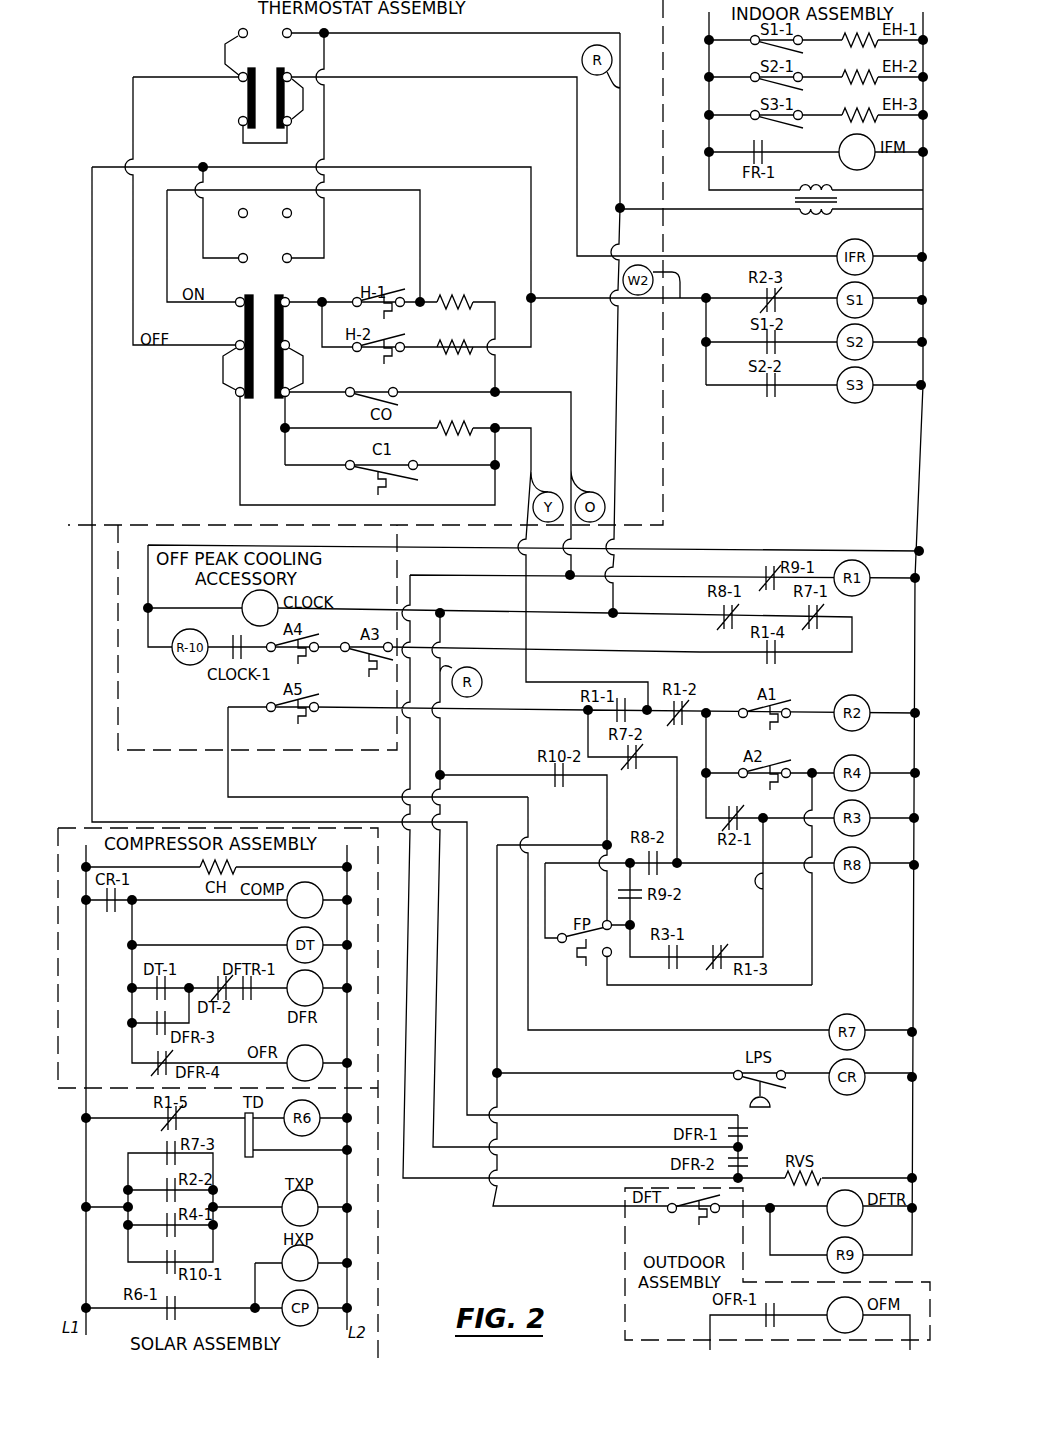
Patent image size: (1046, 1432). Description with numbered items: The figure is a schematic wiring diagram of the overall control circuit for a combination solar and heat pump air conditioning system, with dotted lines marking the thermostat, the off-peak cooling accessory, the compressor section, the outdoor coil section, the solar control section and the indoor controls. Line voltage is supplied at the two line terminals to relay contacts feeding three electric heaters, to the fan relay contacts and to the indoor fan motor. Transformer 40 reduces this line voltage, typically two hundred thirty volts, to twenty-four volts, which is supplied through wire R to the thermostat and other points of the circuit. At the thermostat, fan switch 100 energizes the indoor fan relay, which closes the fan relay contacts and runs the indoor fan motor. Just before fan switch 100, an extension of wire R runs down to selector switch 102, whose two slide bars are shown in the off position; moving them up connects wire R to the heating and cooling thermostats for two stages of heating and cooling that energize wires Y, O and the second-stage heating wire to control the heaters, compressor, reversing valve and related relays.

The fan switch 100 is at (245, 97).
The selector switch 102 is at (240, 322).
The transformer 40 is at (818, 216).